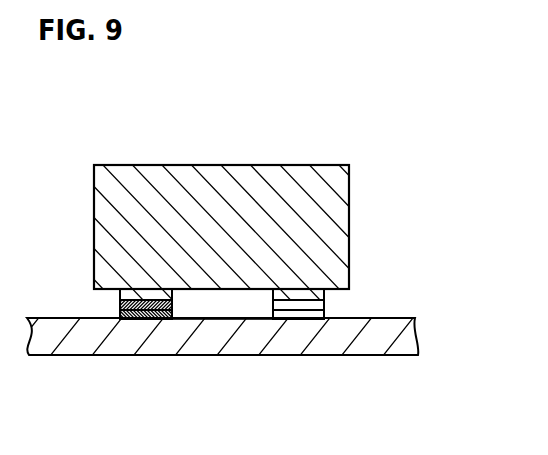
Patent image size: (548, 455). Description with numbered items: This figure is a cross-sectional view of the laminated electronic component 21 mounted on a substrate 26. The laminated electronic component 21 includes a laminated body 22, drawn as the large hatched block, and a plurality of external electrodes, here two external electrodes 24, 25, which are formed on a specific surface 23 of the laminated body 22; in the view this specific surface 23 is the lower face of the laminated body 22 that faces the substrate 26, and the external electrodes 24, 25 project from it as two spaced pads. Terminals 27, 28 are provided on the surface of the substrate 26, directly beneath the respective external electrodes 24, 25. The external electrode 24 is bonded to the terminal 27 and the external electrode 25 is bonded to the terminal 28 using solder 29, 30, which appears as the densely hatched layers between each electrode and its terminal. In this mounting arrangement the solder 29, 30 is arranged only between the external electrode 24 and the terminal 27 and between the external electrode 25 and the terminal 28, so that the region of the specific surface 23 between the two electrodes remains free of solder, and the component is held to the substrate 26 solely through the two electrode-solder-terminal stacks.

The laminated electronic component 21 is at (90, 146).
The laminated body 22 is at (305, 160).
The specific surface 23 is at (220, 289).
The external electrode 24 is at (145, 290).
The external electrode 25 is at (296, 290).
The substrate 26 is at (407, 338).
The terminal 27 is at (140, 320).
The terminal 28 is at (294, 320).
The solder 29 is at (120, 302).
The solder 30 is at (326, 305).